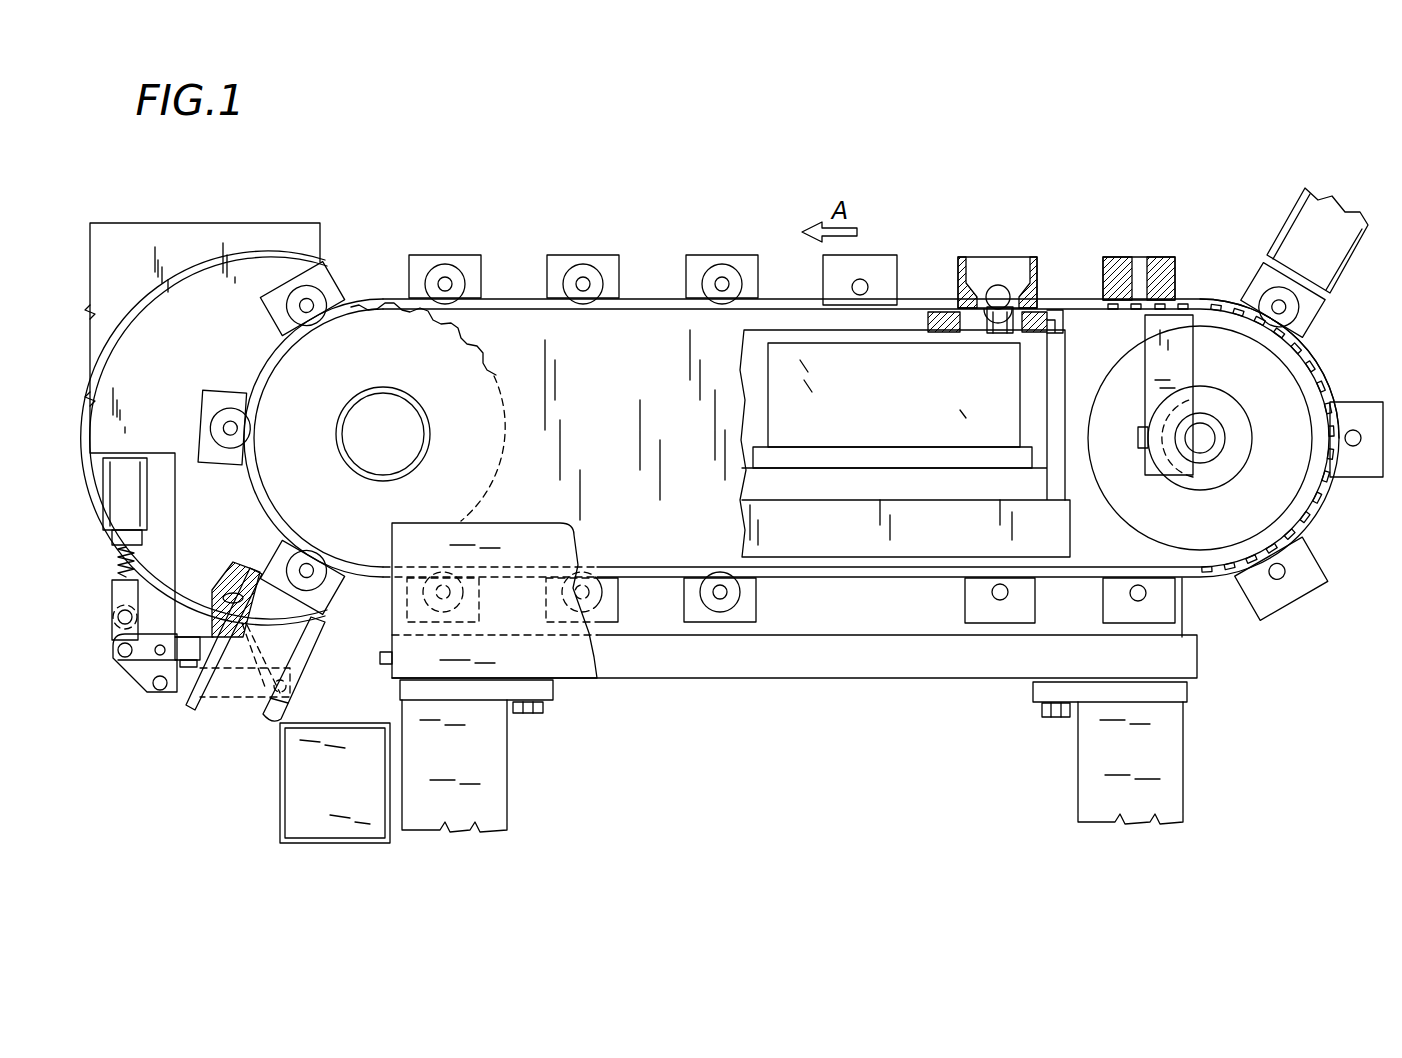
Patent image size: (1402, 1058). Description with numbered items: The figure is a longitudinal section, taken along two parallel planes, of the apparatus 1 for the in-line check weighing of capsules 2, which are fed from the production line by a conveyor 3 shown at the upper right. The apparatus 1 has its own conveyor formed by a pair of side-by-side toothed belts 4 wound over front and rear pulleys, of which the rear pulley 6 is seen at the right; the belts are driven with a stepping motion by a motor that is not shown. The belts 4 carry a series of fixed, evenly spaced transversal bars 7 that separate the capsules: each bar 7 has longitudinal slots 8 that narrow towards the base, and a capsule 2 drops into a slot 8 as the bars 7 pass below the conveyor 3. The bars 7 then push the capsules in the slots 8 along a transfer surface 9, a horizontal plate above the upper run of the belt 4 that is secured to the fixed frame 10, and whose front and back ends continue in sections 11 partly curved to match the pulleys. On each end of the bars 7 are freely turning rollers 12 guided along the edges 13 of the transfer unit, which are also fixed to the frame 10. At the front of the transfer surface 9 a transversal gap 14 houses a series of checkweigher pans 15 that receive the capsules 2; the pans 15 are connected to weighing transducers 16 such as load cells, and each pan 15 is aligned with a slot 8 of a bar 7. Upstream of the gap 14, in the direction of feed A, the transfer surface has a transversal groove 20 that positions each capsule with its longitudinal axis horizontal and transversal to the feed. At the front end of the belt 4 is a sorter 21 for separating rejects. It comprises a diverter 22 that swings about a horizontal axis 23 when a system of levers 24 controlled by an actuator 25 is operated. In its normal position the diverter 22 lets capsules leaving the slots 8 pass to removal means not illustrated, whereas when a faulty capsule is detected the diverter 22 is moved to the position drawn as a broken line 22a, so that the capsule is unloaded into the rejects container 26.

The apparatus 1 is at (739, 143).
The capsules 2 is at (997, 290).
The conveyor 3 is at (1303, 188).
The toothed belts 4 is at (1087, 298).
The pulley 6 is at (1212, 533).
The transversal bars 7 is at (557, 267).
The slots 8 is at (1027, 293).
The transfer surface 9 is at (773, 293).
The fixed frame 10 is at (1062, 298).
The sections 11 is at (1222, 300).
The rollers 12 is at (433, 275).
The edges 13 is at (653, 298).
The transversal gap 14 is at (983, 287).
The checkweigher pans 15 is at (953, 313).
The weighing transducers 16 is at (888, 398).
The transversal groove 20 is at (1137, 297).
The sorter 21 is at (184, 715).
The diverter 22 is at (288, 657).
The broken line position 22a is at (247, 673).
The horizontal axis 23 is at (290, 700).
The system of levers 24 is at (187, 682).
The actuator 25 is at (122, 497).
The rejects container 26 is at (280, 805).